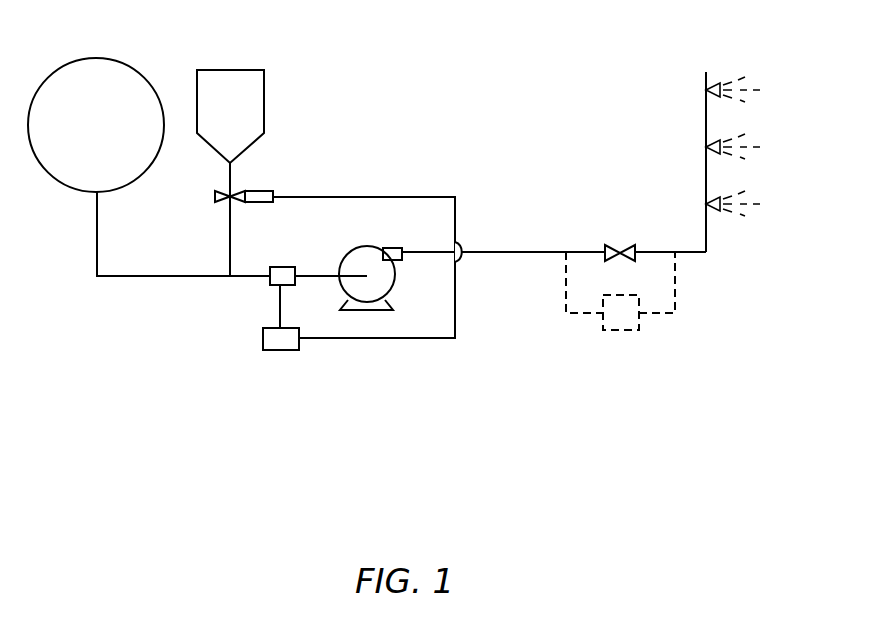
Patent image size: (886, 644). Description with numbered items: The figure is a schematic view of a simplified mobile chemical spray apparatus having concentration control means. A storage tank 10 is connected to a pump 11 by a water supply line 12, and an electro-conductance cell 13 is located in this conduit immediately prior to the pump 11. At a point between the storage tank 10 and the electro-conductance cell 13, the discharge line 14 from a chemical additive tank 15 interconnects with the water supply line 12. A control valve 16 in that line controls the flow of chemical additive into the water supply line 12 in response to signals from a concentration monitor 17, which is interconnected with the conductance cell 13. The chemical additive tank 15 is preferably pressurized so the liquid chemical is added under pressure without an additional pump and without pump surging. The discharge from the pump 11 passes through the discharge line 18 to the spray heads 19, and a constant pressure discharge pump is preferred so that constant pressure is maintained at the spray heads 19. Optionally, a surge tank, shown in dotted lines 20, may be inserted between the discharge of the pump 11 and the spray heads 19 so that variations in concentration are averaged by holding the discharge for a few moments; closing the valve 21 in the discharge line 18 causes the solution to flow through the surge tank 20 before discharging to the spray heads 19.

The storage tank 10 is at (98, 67).
The pump 11 is at (388, 280).
The water supply line 12 is at (165, 277).
The electro-conductance cell 13 is at (280, 278).
The discharge line 14 is at (230, 243).
The chemical additive tank 15 is at (226, 78).
The control valve 16 is at (258, 196).
The concentration monitor 17 is at (288, 342).
The discharge line 18 is at (507, 252).
The spray heads 19 is at (713, 84).
The surge tank 20 is at (627, 330).
The valve 21 is at (617, 247).